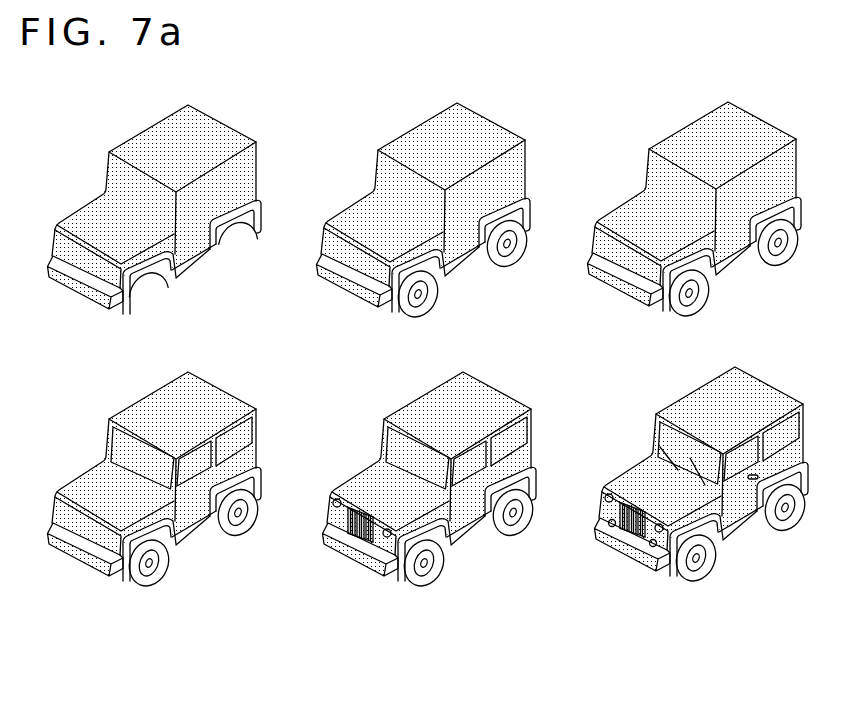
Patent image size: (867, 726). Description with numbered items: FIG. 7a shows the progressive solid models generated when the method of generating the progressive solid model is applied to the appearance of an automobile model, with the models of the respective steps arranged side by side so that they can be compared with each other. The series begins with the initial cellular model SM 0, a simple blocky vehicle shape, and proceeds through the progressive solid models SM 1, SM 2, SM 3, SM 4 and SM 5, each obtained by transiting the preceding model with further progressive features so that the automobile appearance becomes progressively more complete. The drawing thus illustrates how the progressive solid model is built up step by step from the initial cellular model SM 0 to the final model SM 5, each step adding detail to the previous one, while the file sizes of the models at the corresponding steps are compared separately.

The initial cellular model SM^ 0 is at (155, 235).
The progressive solid model SM^ 1 is at (425, 232).
The progressive solid model SM^ 2 is at (696, 231).
The progressive solid model SM^ 3 is at (156, 500).
The progressive solid model SM^ 4 is at (431, 500).
The progressive solid model SM^ 5 is at (703, 496).